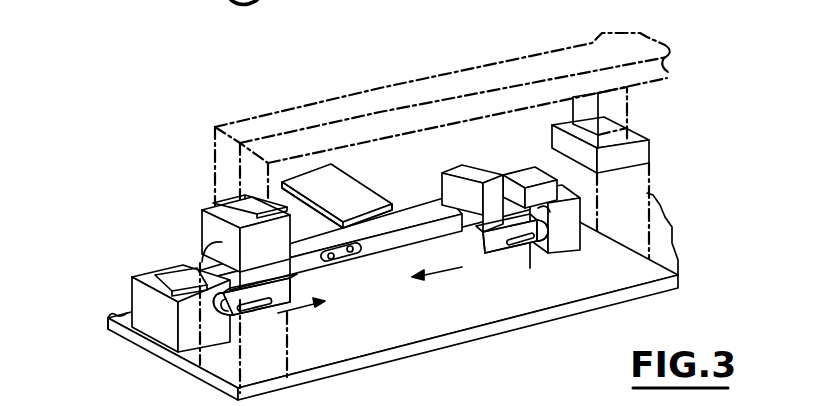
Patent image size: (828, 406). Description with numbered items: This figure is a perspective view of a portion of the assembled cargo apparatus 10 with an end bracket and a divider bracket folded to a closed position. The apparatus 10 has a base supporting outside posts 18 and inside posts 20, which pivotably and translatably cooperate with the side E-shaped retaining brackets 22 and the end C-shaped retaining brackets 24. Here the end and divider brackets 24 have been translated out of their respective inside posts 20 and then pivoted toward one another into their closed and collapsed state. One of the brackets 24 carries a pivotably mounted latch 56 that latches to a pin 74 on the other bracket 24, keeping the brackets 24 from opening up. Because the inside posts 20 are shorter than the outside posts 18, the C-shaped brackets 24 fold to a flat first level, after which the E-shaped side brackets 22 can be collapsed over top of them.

The cargo apparatus 10 is at (158, 77).
The outside posts 18 is at (618, 268).
The inside posts 20 is at (158, 318).
The side E-shaped retaining brackets 22 is at (590, 43).
The end C-shaped retaining brackets 24 is at (320, 248).
The latch 56 is at (352, 244).
The pin 74 is at (338, 260).